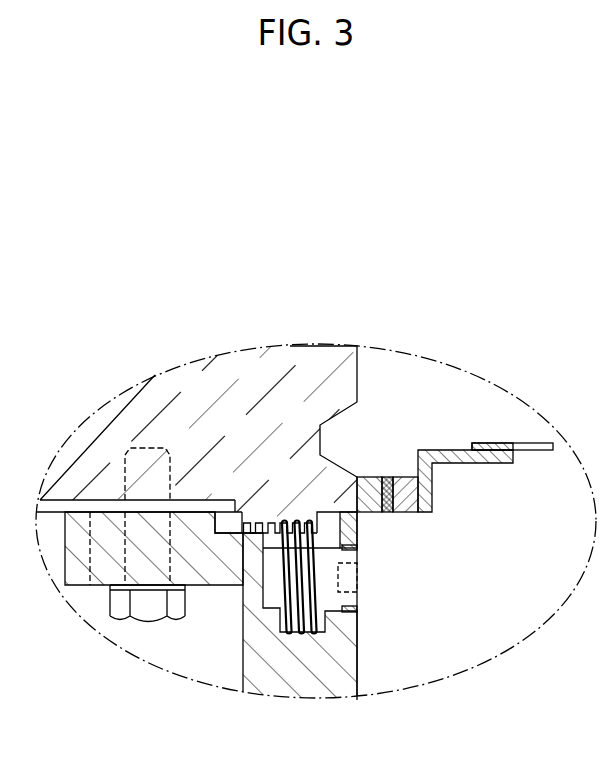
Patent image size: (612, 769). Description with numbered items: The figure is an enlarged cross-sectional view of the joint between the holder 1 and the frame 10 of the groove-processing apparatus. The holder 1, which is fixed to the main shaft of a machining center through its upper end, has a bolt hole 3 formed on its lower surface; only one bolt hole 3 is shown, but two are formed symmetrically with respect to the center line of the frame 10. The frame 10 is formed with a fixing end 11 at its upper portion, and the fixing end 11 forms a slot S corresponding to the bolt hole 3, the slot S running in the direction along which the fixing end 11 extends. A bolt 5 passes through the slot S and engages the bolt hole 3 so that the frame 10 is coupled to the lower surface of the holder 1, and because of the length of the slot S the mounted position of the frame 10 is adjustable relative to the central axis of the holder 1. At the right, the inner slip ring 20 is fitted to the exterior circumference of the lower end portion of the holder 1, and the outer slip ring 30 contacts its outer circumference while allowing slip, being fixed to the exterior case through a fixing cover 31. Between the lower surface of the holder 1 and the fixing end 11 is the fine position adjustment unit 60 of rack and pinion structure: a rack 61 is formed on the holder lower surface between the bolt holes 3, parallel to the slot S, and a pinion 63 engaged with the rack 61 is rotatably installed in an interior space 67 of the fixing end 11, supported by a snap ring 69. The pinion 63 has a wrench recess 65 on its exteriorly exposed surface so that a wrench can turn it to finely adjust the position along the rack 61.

The holder 1 is at (313, 357).
The bolt hole 3 is at (128, 484).
The bolt 5 is at (118, 614).
The frame 10 is at (341, 682).
The fixing end 11 is at (207, 574).
The inner slip ring 20 is at (372, 477).
The outer slip ring 30 is at (406, 477).
The fixing cover 31 is at (452, 450).
The fine position adjustment unit 60 is at (367, 542).
The rack 61 is at (258, 524).
The pinion 63 is at (302, 633).
The wrench recess 65 is at (368, 583).
The interior space 67 is at (282, 631).
The snap ring 69 is at (358, 609).
The slot S is at (104, 570).